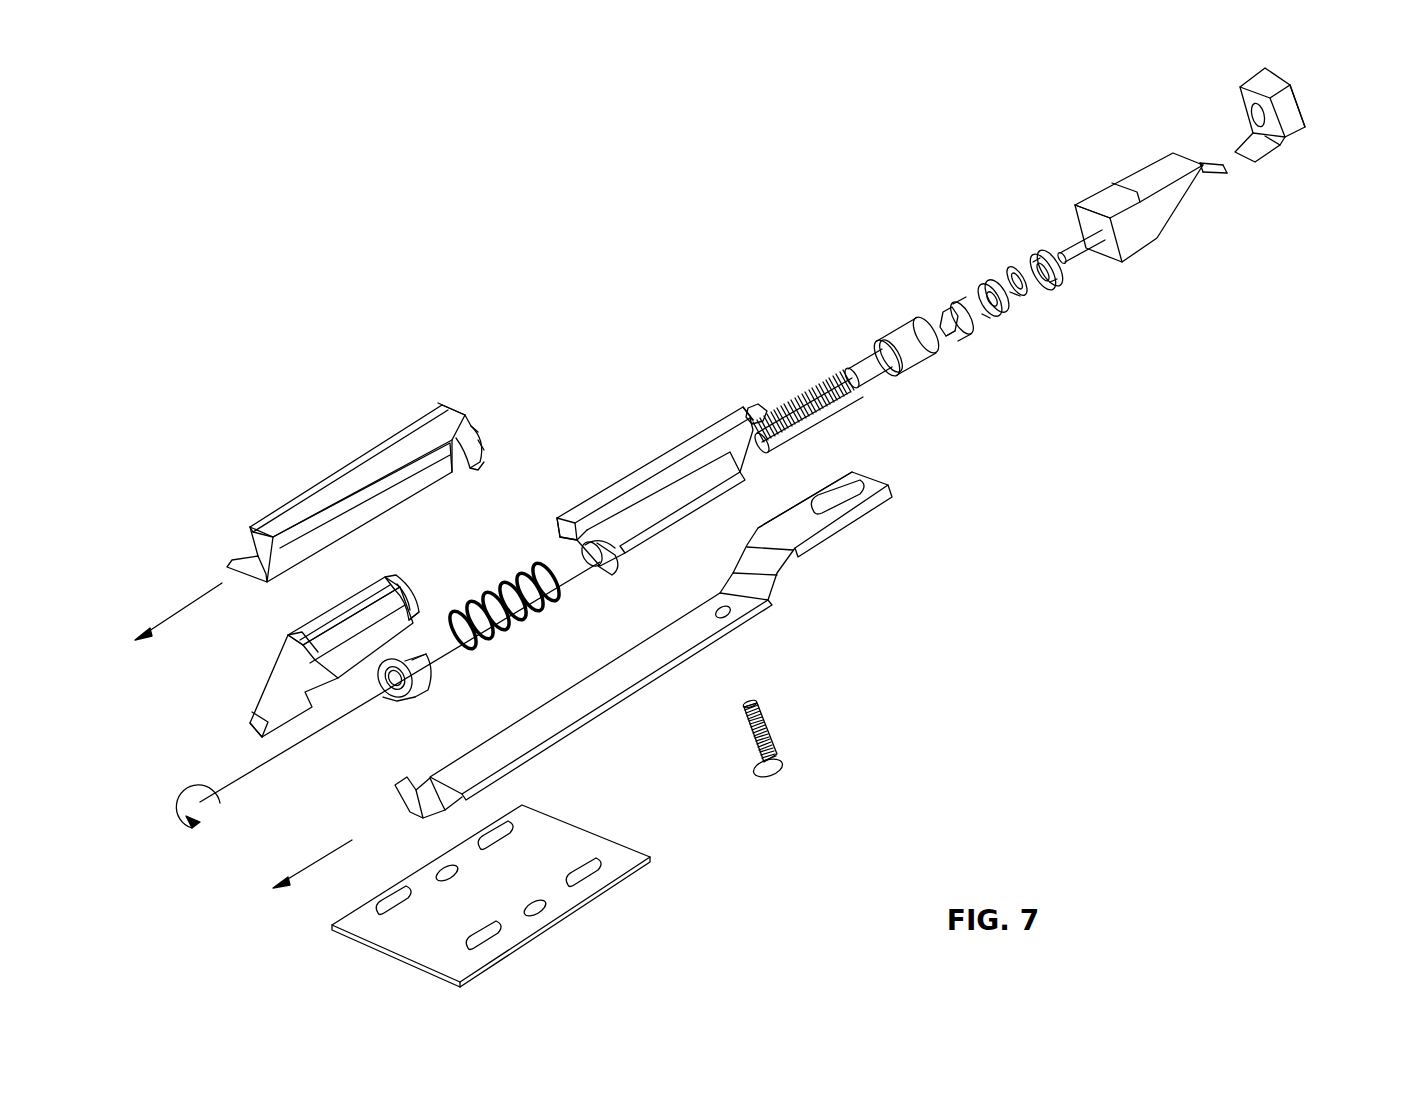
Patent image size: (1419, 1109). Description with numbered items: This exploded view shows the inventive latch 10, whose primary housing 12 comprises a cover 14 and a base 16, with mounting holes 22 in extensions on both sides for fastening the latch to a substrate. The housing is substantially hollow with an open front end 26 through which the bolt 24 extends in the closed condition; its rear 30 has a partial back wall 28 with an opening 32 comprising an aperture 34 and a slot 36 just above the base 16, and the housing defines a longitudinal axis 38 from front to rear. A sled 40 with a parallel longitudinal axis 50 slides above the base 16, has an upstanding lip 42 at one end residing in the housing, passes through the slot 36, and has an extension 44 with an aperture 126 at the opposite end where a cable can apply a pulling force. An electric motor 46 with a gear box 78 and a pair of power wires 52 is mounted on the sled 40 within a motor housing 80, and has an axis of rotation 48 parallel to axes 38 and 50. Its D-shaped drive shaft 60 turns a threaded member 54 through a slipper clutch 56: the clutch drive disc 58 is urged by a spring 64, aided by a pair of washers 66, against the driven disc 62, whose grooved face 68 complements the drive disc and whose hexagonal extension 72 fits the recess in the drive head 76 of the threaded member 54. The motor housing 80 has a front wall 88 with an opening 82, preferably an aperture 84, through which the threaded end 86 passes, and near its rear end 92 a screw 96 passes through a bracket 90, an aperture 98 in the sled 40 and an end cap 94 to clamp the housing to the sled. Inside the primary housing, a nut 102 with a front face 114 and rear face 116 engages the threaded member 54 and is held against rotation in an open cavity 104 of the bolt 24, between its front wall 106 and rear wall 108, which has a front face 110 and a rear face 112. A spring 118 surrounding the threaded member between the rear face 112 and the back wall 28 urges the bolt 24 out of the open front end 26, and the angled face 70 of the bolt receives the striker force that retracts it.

The latch 10 is at (318, 402).
The primary housing 12 is at (385, 432).
The cover 14 is at (293, 489).
The base 16 is at (640, 855).
The slots 22 is at (395, 905).
The bolt 24 is at (283, 652).
The open front end 26 is at (248, 546).
The back wall 28 is at (486, 462).
The rear 30 is at (445, 405).
The opening 32 is at (480, 428).
The aperture 34 is at (482, 442).
The slot 36 is at (466, 413).
The longitudinal axis 38 is at (177, 607).
The sled 40 is at (640, 706).
The upstanding lip 42 is at (395, 790).
The extension 44 is at (790, 585).
The electric motor 46 is at (1140, 165).
The axis of rotation 48 is at (185, 768).
The longitudinal axis 50 is at (302, 866).
The wires 52 is at (1196, 162).
The threaded member 54 is at (856, 367).
The slipper clutch 56 is at (985, 180).
The clutch drive disc 58 is at (980, 290).
The drive shaft 60 is at (1060, 258).
The driven disc 62 is at (945, 313).
The spring 64 is at (1010, 274).
The washers 66 is at (1030, 270).
The face 68 is at (985, 320).
The washer face 70 is at (1012, 300).
The extension 72 is at (958, 344).
The drive head 76 is at (897, 332).
The gear box 78 is at (1090, 195).
The motor housing 80 is at (622, 470).
The opening 82 is at (567, 563).
The aperture 84 is at (610, 560).
The threaded end 86 is at (810, 396).
The front wall 88 is at (563, 543).
The pin 90 is at (745, 405).
The rear end 92 is at (756, 402).
The end cap 94 is at (1300, 100).
The fastener 96 is at (773, 740).
The aperture 98 is at (1290, 135).
The nut 102 is at (432, 702).
The open cavity 104 is at (365, 660).
The front wall 106 is at (306, 636).
The rear wall 108 is at (420, 606).
The front face 110 is at (380, 590).
The rear face 112 is at (405, 582).
The front face 114 is at (390, 700).
The rear face 116 is at (432, 672).
The spring 118 is at (520, 627).
The aperture 126 is at (860, 490).